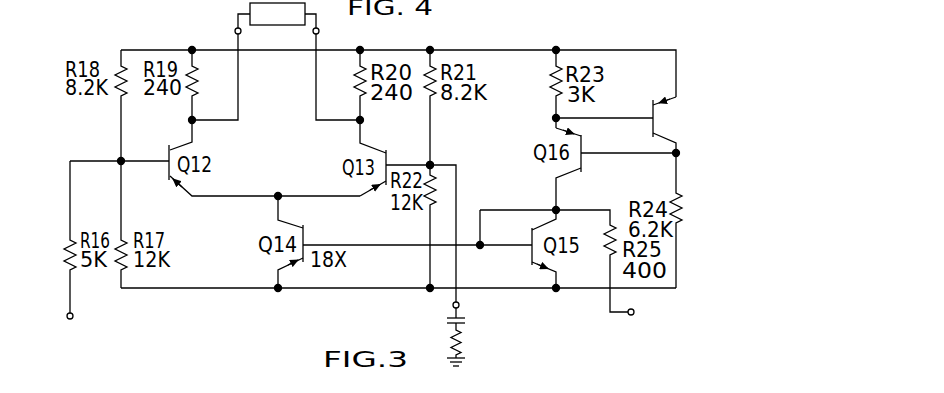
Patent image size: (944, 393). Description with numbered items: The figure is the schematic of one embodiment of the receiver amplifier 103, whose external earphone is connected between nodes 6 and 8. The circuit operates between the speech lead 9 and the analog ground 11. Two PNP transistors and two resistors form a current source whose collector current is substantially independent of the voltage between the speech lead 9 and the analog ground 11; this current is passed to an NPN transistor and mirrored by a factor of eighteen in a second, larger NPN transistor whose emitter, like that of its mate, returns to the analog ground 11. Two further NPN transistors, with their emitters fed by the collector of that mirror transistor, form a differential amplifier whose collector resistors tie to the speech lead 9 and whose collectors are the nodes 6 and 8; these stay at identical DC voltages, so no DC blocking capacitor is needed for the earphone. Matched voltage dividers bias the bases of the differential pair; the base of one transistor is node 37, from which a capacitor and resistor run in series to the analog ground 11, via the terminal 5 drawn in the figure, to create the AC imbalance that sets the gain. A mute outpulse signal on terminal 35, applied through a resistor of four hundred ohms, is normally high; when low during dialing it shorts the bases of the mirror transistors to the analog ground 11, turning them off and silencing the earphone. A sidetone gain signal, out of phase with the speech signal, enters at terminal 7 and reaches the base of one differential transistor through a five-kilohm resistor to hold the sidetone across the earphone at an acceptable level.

The terminal 5 (C105/R103 branch) 5 is at (473, 329).
The node 6 is at (332, 67).
The terminal 7 is at (74, 312).
The node 8 is at (250, 61).
The speech lead 9 is at (468, 50).
The analog ground 11 is at (319, 289).
The terminal 35 is at (631, 316).
The node 37 is at (430, 162).
The receiver amplifier 103 is at (648, 29).